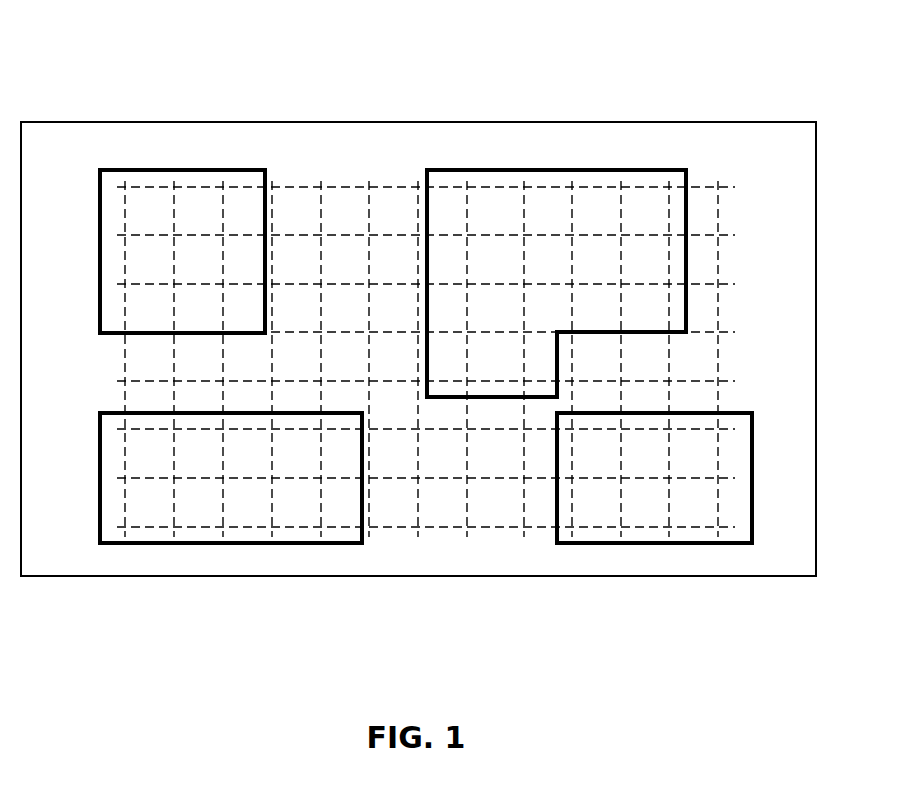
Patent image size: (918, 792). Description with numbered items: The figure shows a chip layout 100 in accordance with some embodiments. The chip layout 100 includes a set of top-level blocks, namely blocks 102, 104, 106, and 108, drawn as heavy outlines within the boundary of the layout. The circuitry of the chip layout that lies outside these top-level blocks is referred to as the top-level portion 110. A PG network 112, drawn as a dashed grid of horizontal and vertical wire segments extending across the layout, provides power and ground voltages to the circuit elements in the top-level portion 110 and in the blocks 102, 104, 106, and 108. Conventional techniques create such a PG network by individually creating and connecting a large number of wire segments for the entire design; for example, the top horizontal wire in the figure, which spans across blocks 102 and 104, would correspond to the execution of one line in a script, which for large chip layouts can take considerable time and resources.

The chip layout 100 is at (21, 576).
The block 102 is at (117, 169).
The block 104 is at (597, 168).
The block 106 is at (263, 546).
The block 108 is at (678, 546).
The top-level portion 110 is at (297, 152).
The PG network 112 is at (377, 185).